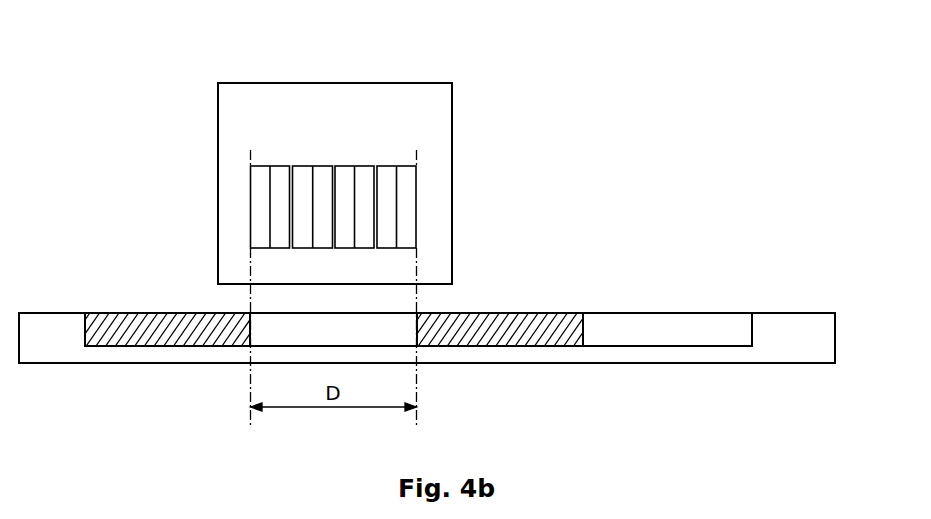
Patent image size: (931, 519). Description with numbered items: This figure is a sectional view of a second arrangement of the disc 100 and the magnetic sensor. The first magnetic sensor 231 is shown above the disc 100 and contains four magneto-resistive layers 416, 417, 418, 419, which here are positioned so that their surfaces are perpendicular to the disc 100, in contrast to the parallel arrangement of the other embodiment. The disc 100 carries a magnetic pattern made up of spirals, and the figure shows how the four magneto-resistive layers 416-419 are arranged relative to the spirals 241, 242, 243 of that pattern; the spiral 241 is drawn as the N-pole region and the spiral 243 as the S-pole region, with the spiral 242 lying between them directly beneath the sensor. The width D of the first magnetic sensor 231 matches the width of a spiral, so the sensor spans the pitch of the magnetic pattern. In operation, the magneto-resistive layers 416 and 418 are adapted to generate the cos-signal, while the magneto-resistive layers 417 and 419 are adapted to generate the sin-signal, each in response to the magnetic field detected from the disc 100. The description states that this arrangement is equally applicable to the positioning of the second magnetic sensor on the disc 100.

The disc 100 is at (820, 325).
The first magnetic sensor 231 is at (430, 93).
The spiral 241 is at (152, 328).
The spiral 242 is at (285, 338).
The spiral 243 is at (700, 325).
The magneto-resistive layer 416 is at (283, 175).
The magneto-resistive layer 417 is at (302, 182).
The magneto-resistive layer 418 is at (343, 175).
The magneto-resistive layer 419 is at (390, 235).